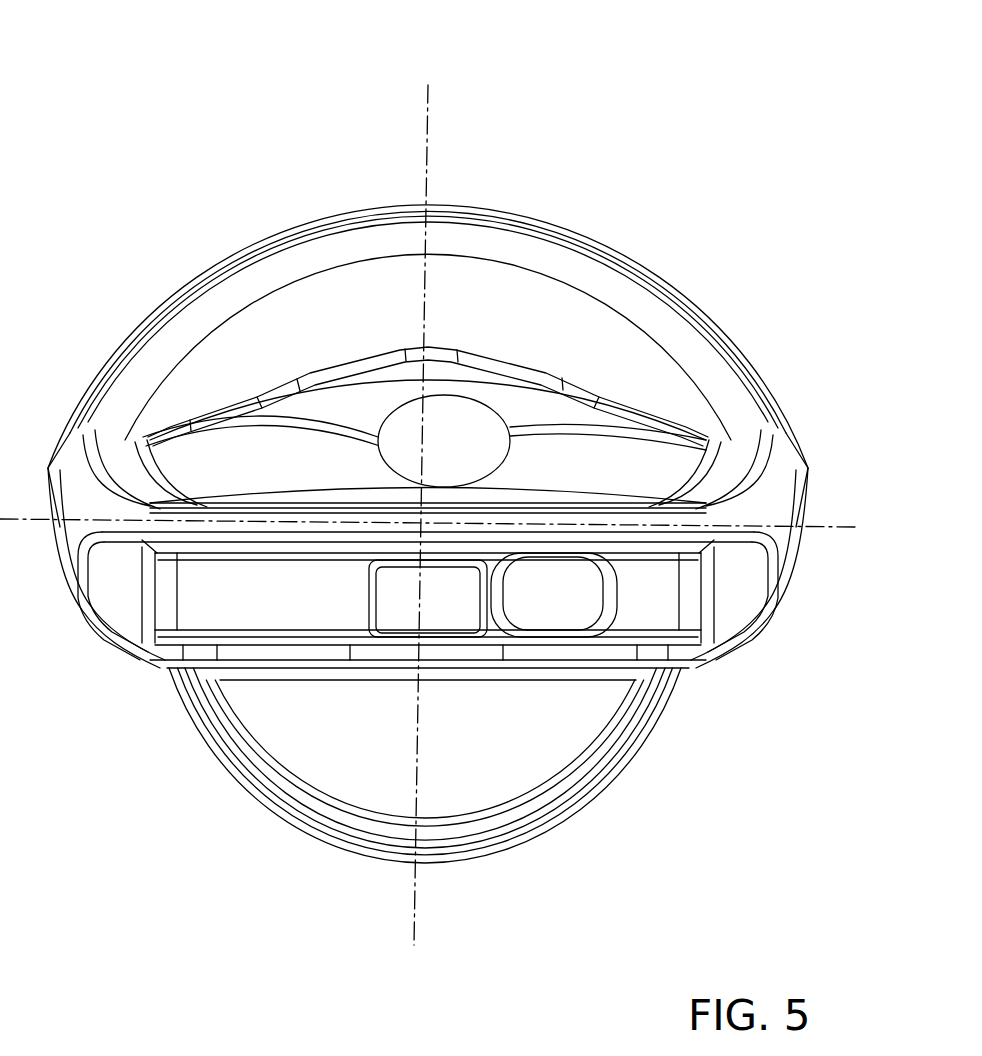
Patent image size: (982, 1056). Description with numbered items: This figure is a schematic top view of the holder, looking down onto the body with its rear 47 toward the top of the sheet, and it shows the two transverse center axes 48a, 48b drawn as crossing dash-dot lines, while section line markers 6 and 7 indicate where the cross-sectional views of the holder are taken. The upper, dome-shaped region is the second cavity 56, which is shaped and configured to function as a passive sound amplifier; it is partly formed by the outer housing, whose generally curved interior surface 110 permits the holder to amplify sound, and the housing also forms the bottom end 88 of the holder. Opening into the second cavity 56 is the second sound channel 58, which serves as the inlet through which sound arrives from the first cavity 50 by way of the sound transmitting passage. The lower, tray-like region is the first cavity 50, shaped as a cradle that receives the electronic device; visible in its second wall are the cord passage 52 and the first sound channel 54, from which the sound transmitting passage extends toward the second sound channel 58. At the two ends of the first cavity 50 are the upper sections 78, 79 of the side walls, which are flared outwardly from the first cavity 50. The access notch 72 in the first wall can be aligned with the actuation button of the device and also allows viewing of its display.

The rear 47 is at (470, 192).
The transverse axis 48a is at (424, 121).
The transverse axis 48b is at (820, 526).
The first cavity 50 is at (250, 602).
The cord passage 52 is at (367, 600).
The first sound channel 54 is at (557, 630).
The second cavity 56 is at (517, 303).
The second sound channel 58 is at (487, 402).
The access notch 72 is at (427, 658).
The upper section of side wall 78 is at (112, 577).
The upper section of side wall 79 is at (735, 588).
The bottom end 88 is at (660, 472).
The interior surface 110 is at (257, 270).
The section line 6- 6 is at (458, 162).
The section line 7- 7 is at (585, 172).